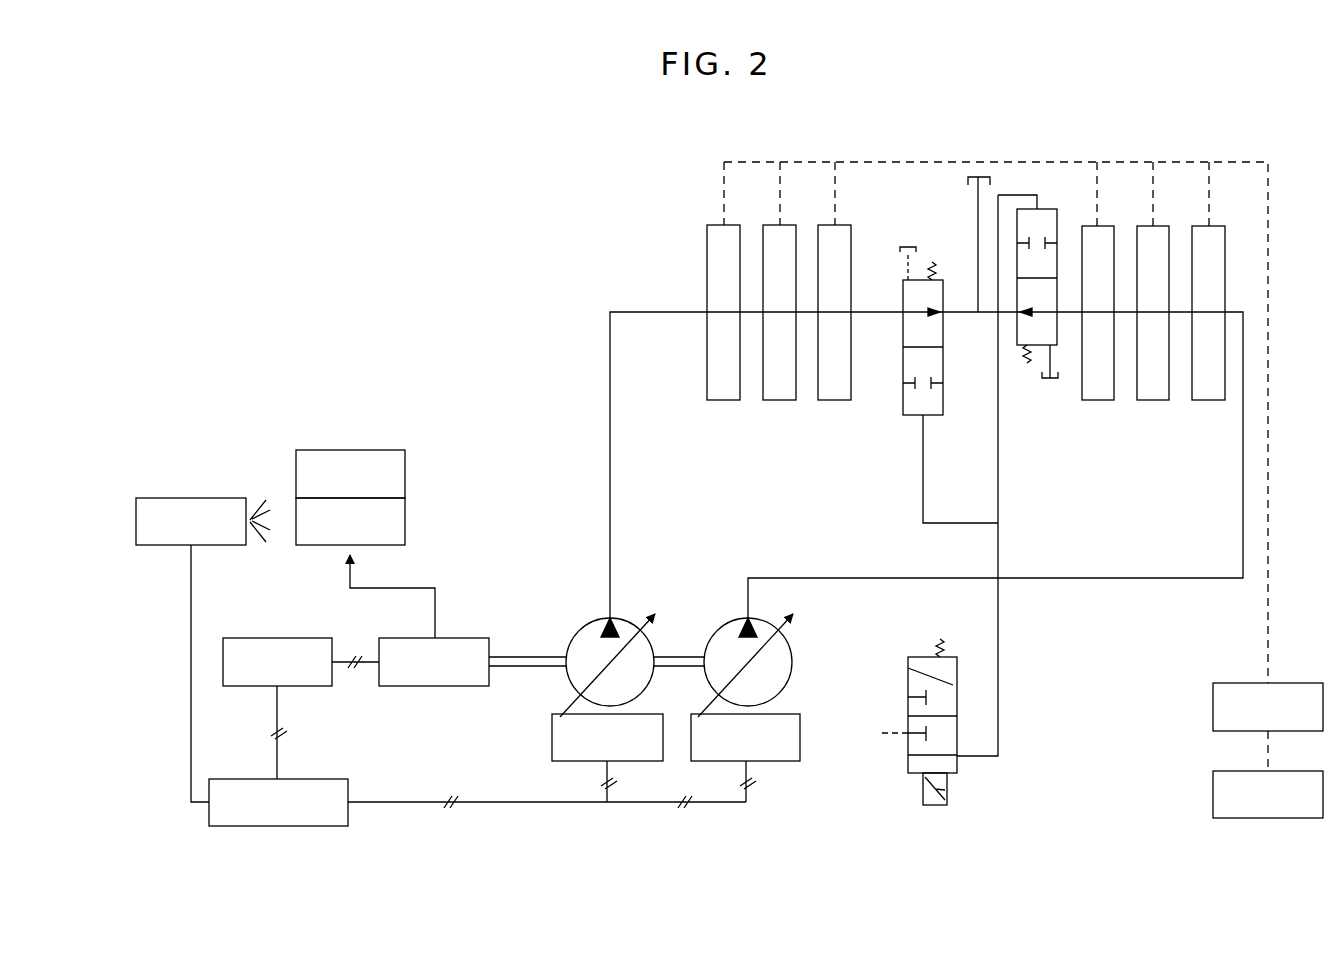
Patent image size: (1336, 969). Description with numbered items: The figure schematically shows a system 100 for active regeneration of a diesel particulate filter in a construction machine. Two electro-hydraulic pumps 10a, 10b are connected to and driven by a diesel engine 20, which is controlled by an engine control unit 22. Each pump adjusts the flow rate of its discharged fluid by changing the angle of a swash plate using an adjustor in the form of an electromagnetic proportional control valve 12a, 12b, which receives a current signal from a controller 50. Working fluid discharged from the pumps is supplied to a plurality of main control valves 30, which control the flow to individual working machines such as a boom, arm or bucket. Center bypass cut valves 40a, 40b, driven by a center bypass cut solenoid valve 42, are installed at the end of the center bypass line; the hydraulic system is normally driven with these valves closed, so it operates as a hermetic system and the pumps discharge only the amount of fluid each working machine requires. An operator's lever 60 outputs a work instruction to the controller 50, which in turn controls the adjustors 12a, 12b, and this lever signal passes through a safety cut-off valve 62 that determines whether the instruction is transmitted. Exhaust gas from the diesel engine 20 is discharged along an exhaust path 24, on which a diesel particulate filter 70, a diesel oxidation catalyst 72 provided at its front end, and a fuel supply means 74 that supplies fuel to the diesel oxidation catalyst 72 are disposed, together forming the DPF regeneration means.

The system 100 is at (218, 166).
The main control valve 30 is at (707, 250).
The center bypass cut valve 40a is at (903, 410).
The center bypass cut valve 40b is at (1043, 209).
The center bypass cut solenoid valve 42 is at (957, 760).
The electro-hydraulic pump 10a is at (587, 626).
The electro-hydraulic pump 10b is at (792, 676).
The electromagnetic proportional control valve 12a is at (570, 762).
The electromagnetic proportional control valve 12b is at (778, 762).
The controller 50 is at (276, 828).
The fuel supply means 74 is at (188, 498).
The diesel particulate filter 70 is at (405, 470).
The diesel oxidation catalyst 72 is at (405, 520).
The exhaust path 24 is at (390, 588).
The engine control unit 22 is at (258, 638).
The diesel engine 20 is at (478, 638).
The safety cut-off valve 62 is at (1213, 707).
The lever 60 is at (1213, 797).